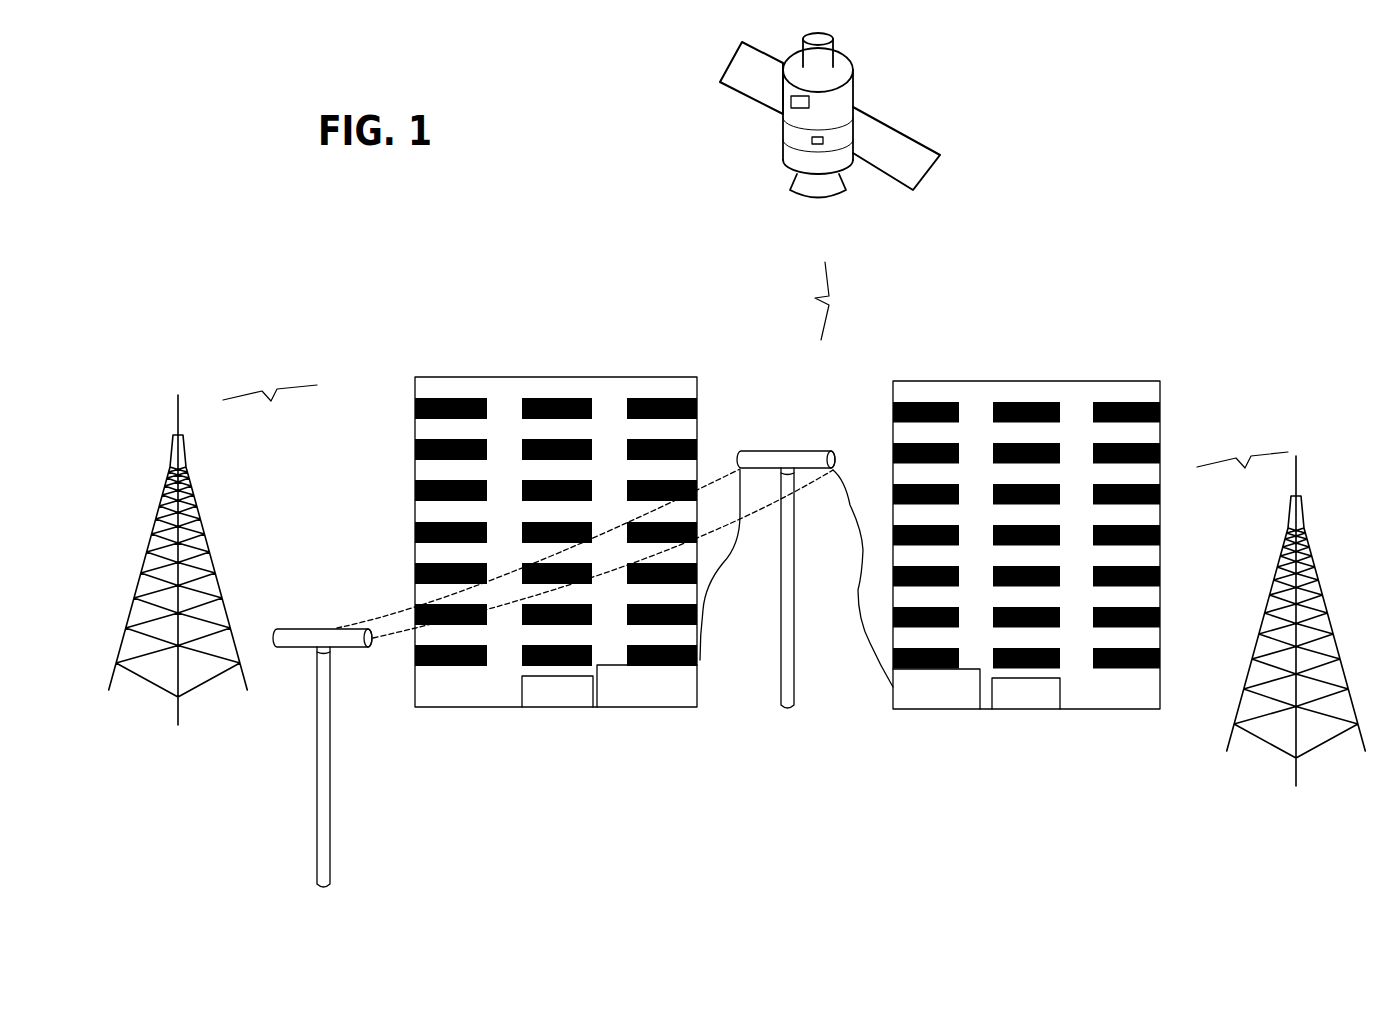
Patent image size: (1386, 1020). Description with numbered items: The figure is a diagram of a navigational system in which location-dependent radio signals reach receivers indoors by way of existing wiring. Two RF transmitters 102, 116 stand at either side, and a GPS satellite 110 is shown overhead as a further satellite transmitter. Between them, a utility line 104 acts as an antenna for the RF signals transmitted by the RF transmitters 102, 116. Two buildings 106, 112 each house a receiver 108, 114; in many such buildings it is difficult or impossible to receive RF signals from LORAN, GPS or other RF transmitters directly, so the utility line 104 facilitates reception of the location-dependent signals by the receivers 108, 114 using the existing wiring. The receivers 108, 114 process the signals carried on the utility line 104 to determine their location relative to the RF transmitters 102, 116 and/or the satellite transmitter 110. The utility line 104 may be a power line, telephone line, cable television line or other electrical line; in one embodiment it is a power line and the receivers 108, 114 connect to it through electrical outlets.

The RF transmitter 102 is at (198, 475).
The utility line 104 is at (332, 628).
The building 106 is at (542, 377).
The receiver 108 is at (687, 692).
The GPS satellite 110 is at (940, 148).
The building 112 is at (1012, 380).
The receiver 114 is at (967, 702).
The RF transmitter 116 is at (1302, 453).